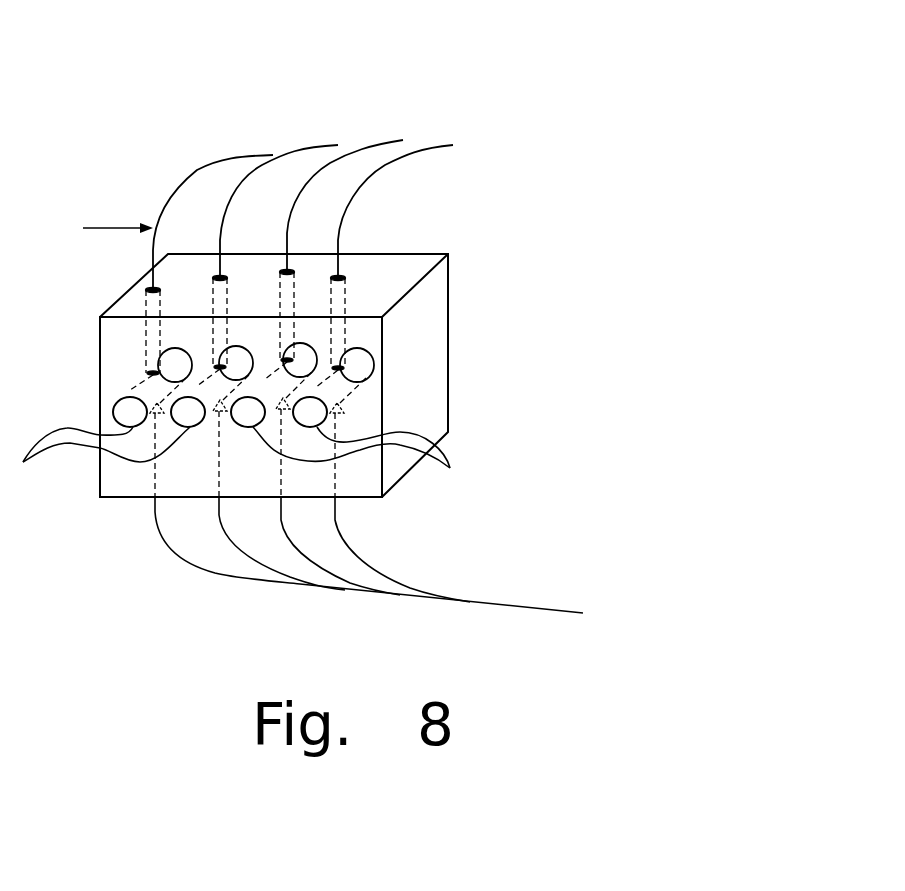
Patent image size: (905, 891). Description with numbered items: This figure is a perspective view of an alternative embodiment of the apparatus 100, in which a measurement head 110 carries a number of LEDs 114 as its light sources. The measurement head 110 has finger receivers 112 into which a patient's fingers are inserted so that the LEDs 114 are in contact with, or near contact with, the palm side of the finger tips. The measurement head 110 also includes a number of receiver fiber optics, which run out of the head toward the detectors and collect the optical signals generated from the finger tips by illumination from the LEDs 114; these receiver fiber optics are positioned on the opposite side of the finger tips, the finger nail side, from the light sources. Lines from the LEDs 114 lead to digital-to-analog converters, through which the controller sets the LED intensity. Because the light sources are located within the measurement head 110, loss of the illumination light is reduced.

The apparatus 100 is at (150, 88).
The measurement head 110 is at (100, 362).
The finger receivers 112 is at (369, 505).
The LEDs (light-emitting diodes) 114 is at (708, 400).